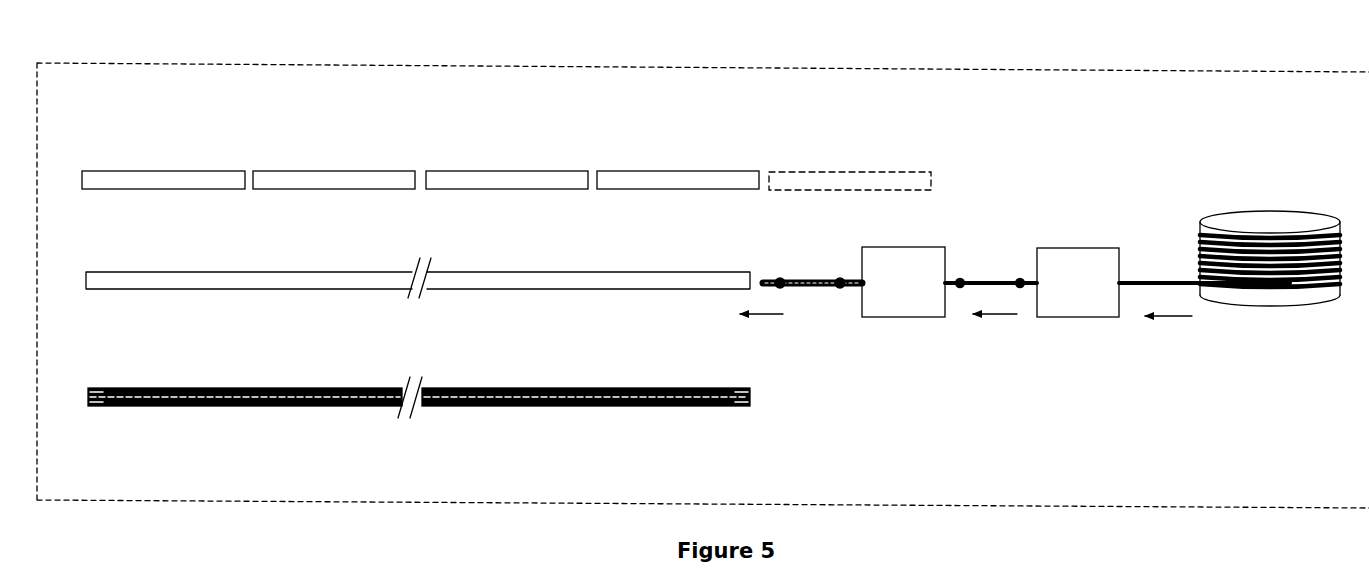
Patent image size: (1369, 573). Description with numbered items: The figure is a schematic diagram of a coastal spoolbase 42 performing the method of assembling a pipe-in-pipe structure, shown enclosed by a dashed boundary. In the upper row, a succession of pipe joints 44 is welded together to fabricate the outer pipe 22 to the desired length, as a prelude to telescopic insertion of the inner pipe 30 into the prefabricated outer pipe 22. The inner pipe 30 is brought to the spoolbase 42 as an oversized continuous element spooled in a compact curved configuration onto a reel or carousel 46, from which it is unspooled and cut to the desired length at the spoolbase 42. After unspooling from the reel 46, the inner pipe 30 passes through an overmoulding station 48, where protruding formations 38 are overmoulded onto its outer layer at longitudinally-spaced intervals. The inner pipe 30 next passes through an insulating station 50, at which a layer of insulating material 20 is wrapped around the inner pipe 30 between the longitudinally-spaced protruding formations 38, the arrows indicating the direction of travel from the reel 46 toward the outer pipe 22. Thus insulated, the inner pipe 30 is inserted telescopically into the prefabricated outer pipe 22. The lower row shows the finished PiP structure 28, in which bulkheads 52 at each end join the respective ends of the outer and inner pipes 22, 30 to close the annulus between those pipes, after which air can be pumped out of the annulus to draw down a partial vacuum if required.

The spoolbase 42 is at (176, 62).
The pipe joints 44 is at (323, 176).
The outer pipe 22 is at (376, 282).
The layer of insulating material 20 is at (808, 278).
The protruding formations 38 is at (958, 278).
The insulating station 50 is at (910, 303).
The overmoulding station 48 is at (1072, 307).
The inner pipe 30 is at (1165, 280).
The reel or carousel 46 is at (1278, 297).
The PiP structure 28 is at (252, 368).
The bulkheads 52 is at (97, 407).